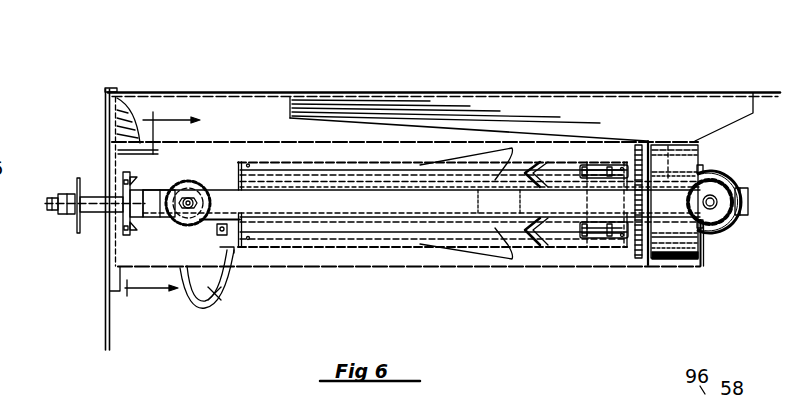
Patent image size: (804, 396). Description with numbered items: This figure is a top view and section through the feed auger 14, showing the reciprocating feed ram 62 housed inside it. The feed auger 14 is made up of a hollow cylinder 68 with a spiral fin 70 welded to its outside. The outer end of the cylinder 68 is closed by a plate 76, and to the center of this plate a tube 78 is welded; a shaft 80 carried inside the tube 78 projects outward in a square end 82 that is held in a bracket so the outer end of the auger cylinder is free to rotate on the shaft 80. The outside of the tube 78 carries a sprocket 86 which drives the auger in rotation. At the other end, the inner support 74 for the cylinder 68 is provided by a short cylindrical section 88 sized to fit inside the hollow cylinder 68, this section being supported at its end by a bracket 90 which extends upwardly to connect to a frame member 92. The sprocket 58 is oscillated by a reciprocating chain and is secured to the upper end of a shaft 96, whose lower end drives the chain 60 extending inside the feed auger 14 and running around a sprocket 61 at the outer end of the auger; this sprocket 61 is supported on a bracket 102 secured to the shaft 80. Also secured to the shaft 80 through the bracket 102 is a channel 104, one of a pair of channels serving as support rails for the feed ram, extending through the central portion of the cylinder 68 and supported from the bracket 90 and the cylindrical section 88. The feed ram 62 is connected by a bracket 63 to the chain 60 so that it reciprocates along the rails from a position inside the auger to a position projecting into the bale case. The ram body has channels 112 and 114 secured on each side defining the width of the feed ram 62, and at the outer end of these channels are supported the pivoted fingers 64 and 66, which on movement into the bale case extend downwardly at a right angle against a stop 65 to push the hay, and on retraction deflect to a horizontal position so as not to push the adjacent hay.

The feed auger 14 is at (347, 272).
The frame member 92 is at (579, 86).
The hollow cylinder 68 is at (264, 150).
The channel 114 is at (372, 161).
The channel 112 is at (388, 251).
The channel 104 is at (366, 208).
The feed ram 62 is at (548, 254).
The stop 65 is at (609, 250).
The short cylindrical section 88 is at (673, 266).
The finger 64 is at (660, 266).
The finger 66 is at (668, 150).
The sprocket 58 is at (723, 193).
The inner support 74 is at (722, 236).
The shaft 96 is at (745, 203).
The bracket 90 is at (703, 252).
The spiral fin 70 is at (211, 290).
The shaft 80 is at (47, 203).
The square end 82 is at (60, 215).
The sprocket 86 is at (77, 185).
The tube 78 is at (92, 196).
The plate 76 is at (126, 160).
The bracket 102 is at (137, 226).
The chain 60 is at (201, 184).
The sprocket 61 is at (216, 192).
The bracket 63 is at (216, 232).